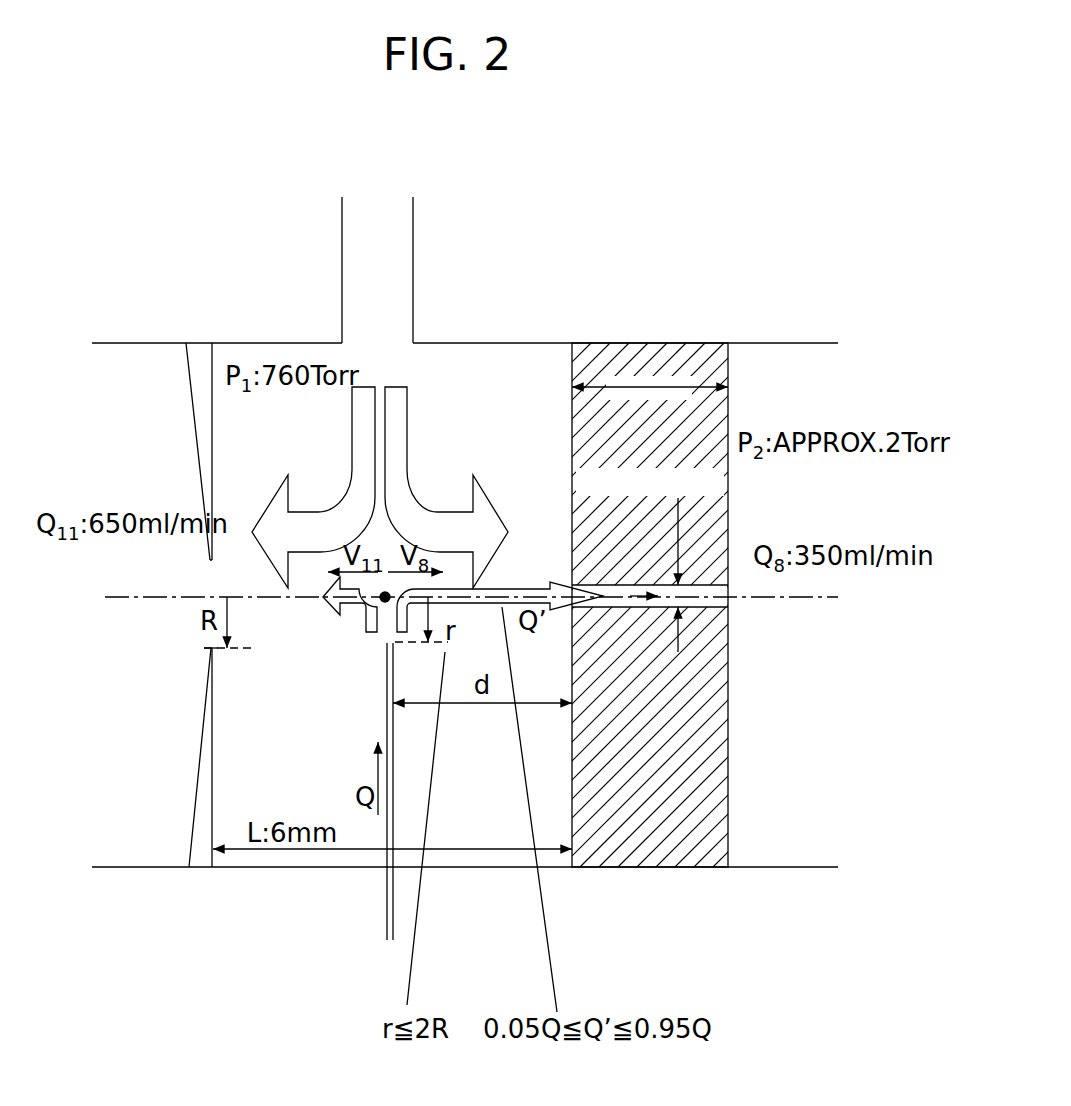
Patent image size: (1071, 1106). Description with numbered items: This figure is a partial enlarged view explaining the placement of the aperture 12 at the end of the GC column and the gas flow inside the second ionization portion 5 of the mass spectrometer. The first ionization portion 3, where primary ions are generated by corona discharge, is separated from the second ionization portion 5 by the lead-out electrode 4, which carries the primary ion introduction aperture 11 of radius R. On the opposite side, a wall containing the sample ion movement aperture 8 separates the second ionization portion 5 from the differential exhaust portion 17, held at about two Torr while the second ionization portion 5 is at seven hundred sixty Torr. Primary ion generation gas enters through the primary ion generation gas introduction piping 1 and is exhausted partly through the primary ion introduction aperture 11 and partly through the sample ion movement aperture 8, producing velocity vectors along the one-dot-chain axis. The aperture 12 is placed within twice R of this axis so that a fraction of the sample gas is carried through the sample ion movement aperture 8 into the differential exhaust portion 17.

The primary ion generation gas introduction piping 1 is at (387, 268).
The first ionization portion 3 is at (145, 835).
The lead-out electrode 4 is at (198, 343).
The second ionization portion 5 is at (478, 832).
The sample ion movement aperture 8 is at (604, 604).
The primary ion introduction aperture 11 is at (197, 578).
The aperture at the end of the GC column 12 is at (388, 638).
The differential exhaust portion 17 is at (792, 393).